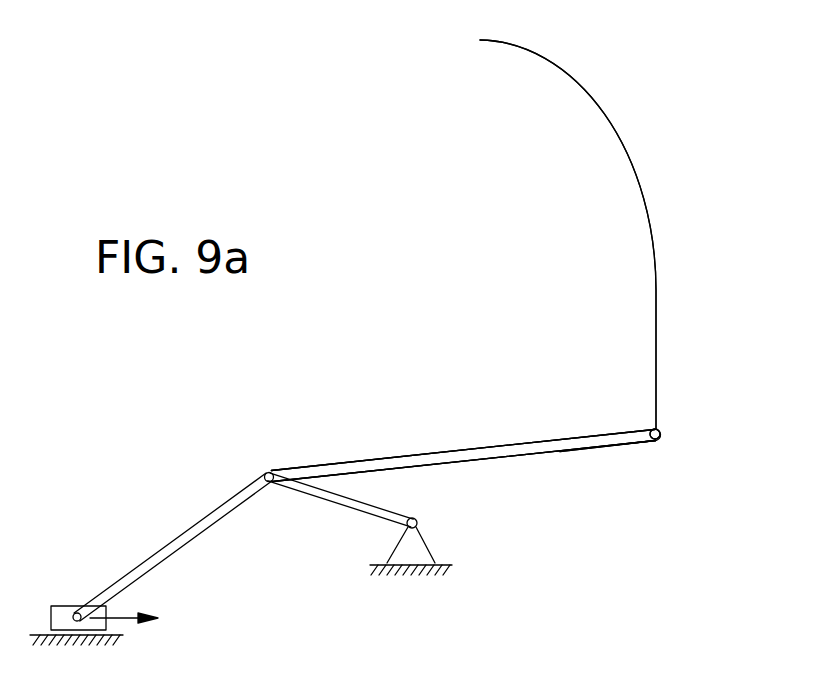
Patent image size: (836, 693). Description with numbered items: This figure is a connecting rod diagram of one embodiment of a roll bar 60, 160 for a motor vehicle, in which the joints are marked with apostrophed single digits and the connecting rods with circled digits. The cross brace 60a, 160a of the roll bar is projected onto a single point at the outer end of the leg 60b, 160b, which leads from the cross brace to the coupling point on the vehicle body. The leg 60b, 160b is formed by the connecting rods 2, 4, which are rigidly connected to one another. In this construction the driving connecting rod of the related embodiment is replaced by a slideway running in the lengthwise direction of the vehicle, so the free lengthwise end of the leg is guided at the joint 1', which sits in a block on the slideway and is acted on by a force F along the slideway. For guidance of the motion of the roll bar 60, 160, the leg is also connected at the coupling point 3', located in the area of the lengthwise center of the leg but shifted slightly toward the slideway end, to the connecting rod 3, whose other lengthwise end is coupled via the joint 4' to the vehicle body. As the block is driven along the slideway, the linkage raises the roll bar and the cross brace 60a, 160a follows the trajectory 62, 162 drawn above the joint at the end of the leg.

The joint 1' is at (76, 592).
The force F is at (120, 617).
The connecting rod 2 is at (177, 536).
The coupling point 3' is at (253, 442).
The connecting rod 3 is at (340, 517).
The joint 4' is at (428, 540).
The connecting rod 4 is at (465, 426).
The roll bar 60 is at (375, 450).
The arm 160 is at (375, 450).
The cross brace 60a is at (659, 438).
The arm end 160a is at (659, 438).
The leg 60b is at (568, 449).
The arm section 160b is at (568, 449).
The trajectory 62 is at (637, 177).
The path of arm end 162 is at (637, 177).